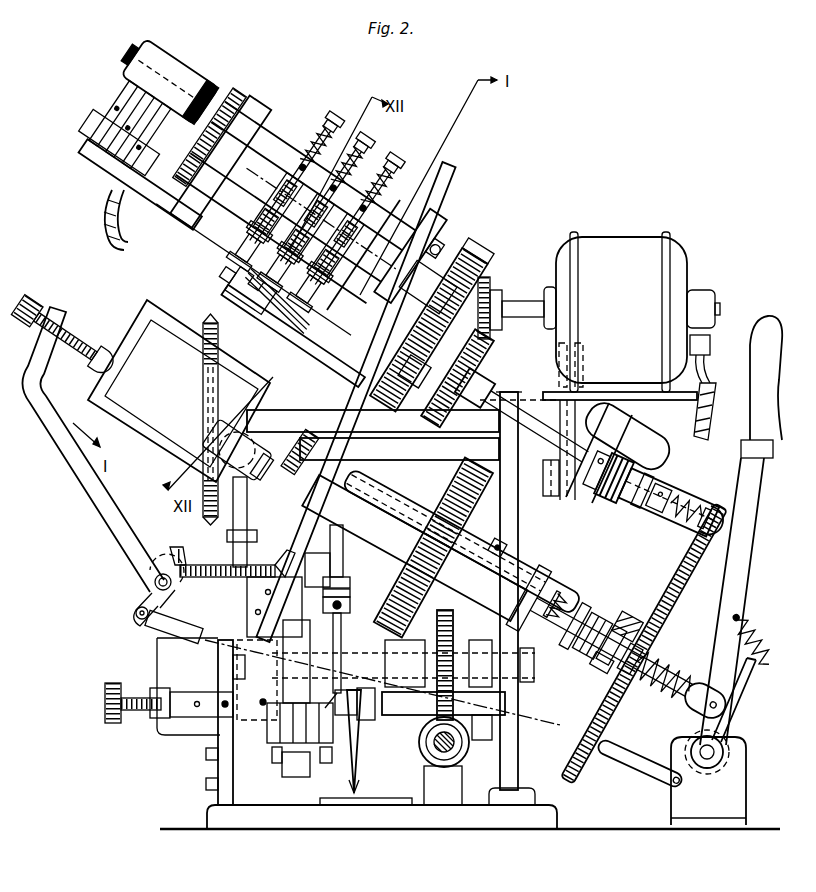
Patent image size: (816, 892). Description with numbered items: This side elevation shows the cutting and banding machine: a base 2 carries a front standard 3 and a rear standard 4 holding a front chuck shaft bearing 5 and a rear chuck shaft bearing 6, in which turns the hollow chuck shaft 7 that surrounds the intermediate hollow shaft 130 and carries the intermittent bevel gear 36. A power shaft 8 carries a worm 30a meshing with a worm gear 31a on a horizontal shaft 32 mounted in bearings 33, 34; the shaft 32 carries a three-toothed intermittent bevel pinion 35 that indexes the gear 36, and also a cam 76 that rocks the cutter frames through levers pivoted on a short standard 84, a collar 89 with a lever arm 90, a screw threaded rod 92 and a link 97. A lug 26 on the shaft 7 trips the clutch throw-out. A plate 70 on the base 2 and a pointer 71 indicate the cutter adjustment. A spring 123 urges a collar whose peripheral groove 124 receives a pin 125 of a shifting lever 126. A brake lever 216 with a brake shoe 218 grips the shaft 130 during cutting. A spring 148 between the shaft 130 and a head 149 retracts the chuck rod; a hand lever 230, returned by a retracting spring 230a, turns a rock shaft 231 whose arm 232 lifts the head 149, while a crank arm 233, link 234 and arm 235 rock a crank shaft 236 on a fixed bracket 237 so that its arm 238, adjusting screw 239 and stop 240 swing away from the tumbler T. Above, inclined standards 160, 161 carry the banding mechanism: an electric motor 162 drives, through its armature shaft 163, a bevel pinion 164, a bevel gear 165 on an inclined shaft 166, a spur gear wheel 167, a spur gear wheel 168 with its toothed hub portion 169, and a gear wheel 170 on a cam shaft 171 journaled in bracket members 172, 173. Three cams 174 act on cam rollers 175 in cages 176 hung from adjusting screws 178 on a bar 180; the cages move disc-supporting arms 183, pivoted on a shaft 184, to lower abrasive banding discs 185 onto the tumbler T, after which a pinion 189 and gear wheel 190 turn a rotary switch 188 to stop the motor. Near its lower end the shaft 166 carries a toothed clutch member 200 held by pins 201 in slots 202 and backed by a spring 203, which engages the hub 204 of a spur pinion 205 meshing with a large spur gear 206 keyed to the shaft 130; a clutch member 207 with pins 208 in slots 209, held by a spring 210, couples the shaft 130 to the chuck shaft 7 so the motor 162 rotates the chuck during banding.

The base 2 is at (430, 822).
The front standard 3 is at (258, 764).
The rear standard 4 is at (520, 768).
The front chuck shaft bearing 5 is at (355, 478).
The rear chuck shaft bearing 6 is at (552, 598).
The hollow chuck shaft 7 is at (405, 512).
The power shaft 8 is at (423, 755).
The lug 26 is at (510, 548).
The worm 30a is at (443, 768).
The worm gear 31a is at (428, 730).
The horizontal shaft 32 is at (534, 664).
The front bearing 33 is at (232, 667).
The rear bearing 34 is at (522, 690).
The intermittent bevel pinion 35 is at (437, 705).
The intermittent bevel gear 36 is at (452, 494).
The indicator plate 70 is at (392, 800).
The pointer 71 is at (358, 752).
The cam 76 is at (340, 660).
The short standard 84 is at (343, 570).
The collar 89 is at (350, 583).
The lever arm 90 is at (350, 594).
The screw threaded rod 92 is at (350, 607).
The link 97 is at (341, 640).
The spring 123 is at (304, 405).
The peripheral groove 124 is at (270, 444).
The pin 125 is at (305, 440).
The shifting lever 126 is at (335, 452).
The intermediate hollow shaft 130 is at (428, 522).
The spring 148 is at (672, 676).
The head 149 is at (682, 716).
The front inclined standard 160 is at (438, 286).
The rear inclined standard 161 is at (624, 418).
The electric motor 162 is at (608, 242).
The armature shaft 163 is at (520, 302).
The bevel pinion 164 is at (490, 285).
The bevel gear 165 is at (480, 348).
The inclined shaft 166 is at (482, 395).
The spur gear wheel 167 is at (430, 340).
The spur gear wheel 168 is at (403, 416).
The toothed hub portion 169 is at (400, 375).
The gear wheel 170 is at (480, 266).
The cam shaft 171 is at (246, 205).
The bracket member 172 is at (428, 234).
The bracket member 173 is at (258, 118).
The cams 174 is at (283, 200).
The cam rollers 175 is at (400, 200).
The cages 176 is at (258, 232).
The adjusting screws 178 is at (400, 158).
The bar 180 is at (290, 140).
The disc-supporting arms 183 is at (250, 294).
The shaft 184 is at (327, 350).
The banding discs 185 is at (257, 350).
The rotary switch 188 is at (175, 70).
The pinion 189 is at (178, 210).
The gear wheel 190 is at (235, 90).
The toothed clutch member 200 is at (648, 512).
The pins 201 is at (650, 478).
The slots 202 is at (666, 490).
The spring 203 is at (628, 468).
The hub 204 is at (680, 526).
The spur pinion 205 is at (700, 538).
The large spur gear 206 is at (660, 626).
The toothed clutch member 207 is at (592, 615).
The pins 208 is at (574, 620).
The slots 209 is at (560, 600).
The spring 210 is at (610, 625).
The brake lever 216 is at (628, 630).
The brake shoe 218 is at (600, 668).
The hand lever 230 is at (728, 604).
The retracting spring 230a is at (745, 628).
The rock shaft 231 is at (723, 746).
The arm 232 is at (745, 700).
The crank arm 233 is at (696, 780).
The link 234 is at (632, 776).
The arm 235 is at (135, 598).
The crank shaft 236 is at (148, 582).
The fixed bracket 237 is at (135, 618).
The arm 238 is at (83, 482).
The adjusting screw 239 is at (75, 330).
The stop member 240 is at (108, 350).
The tumbler T is at (130, 428).